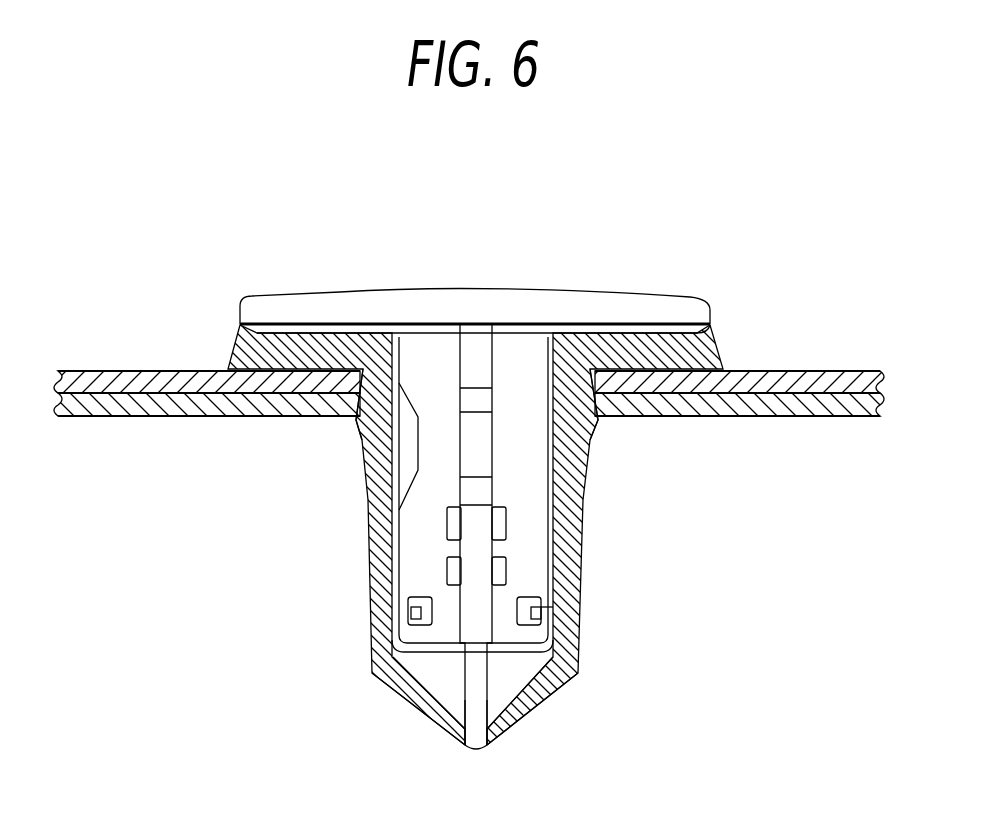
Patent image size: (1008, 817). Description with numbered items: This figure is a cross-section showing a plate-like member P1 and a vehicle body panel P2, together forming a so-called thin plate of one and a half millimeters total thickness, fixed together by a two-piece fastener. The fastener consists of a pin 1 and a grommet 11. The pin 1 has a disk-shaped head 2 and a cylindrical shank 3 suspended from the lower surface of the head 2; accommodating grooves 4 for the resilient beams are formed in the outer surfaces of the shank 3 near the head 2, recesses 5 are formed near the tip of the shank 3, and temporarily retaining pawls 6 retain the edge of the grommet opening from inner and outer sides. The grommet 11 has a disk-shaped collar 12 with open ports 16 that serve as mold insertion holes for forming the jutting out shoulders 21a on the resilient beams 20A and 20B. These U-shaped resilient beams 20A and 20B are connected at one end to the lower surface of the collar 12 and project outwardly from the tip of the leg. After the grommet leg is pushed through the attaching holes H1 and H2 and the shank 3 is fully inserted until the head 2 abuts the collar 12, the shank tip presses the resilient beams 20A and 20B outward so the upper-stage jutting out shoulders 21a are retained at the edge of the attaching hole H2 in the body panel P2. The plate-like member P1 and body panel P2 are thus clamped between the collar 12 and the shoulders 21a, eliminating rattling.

The pin 1 is at (475, 488).
The head 2 is at (383, 298).
The shank 3 is at (550, 457).
The accommodating groove 4 is at (472, 510).
The recess 5 is at (408, 612).
The temporarily retaining pawl 6 is at (376, 565).
The grommet 11 is at (475, 516).
The collar 12 is at (240, 347).
The open port 16 is at (337, 294).
The resilient beam 20A is at (373, 674).
The resilient beam 20B is at (488, 685).
The jutting out shoulder 21a is at (353, 425).
The attaching hole H1 is at (197, 371).
The attaching hole H2 is at (250, 417).
The plate-like member P1 is at (469, 326).
The body panel P2 is at (469, 454).